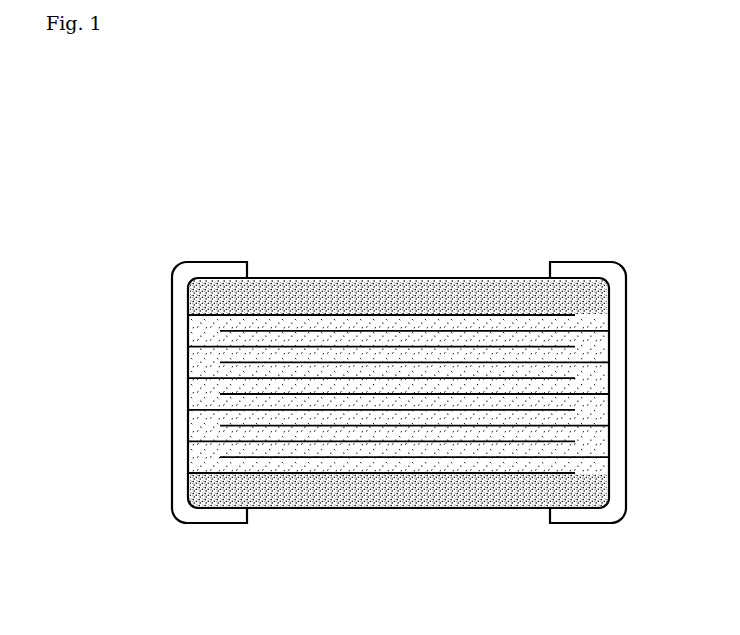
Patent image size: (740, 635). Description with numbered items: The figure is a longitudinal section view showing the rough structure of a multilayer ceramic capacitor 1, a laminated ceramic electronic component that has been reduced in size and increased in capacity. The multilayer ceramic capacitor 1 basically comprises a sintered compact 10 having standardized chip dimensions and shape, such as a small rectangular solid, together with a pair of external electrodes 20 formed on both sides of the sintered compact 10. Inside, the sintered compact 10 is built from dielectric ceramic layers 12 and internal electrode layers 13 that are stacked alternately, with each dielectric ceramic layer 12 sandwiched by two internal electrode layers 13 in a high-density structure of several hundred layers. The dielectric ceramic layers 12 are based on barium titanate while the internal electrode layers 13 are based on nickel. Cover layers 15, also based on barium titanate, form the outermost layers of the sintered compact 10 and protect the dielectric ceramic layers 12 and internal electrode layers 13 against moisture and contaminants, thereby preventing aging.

The multilayer ceramic capacitor 1 is at (613, 158).
The sintered compact 10 is at (462, 278).
The dielectric ceramic layer 12 is at (482, 418).
The internal electrode layer 13 is at (393, 426).
The cover layer 15 is at (352, 280).
The external electrode 20 is at (183, 279).